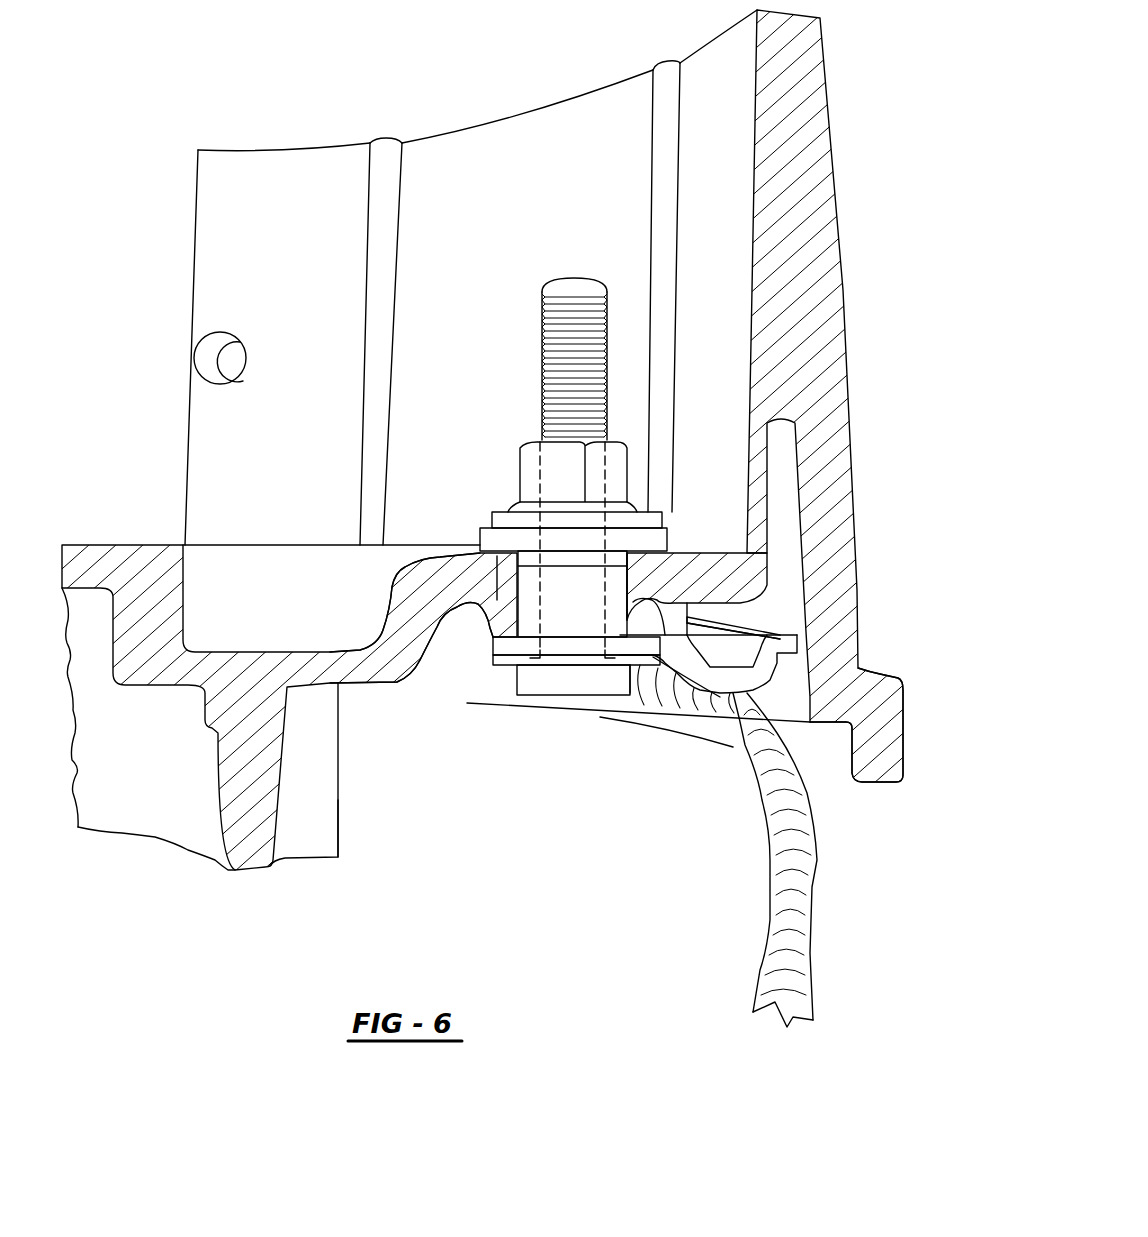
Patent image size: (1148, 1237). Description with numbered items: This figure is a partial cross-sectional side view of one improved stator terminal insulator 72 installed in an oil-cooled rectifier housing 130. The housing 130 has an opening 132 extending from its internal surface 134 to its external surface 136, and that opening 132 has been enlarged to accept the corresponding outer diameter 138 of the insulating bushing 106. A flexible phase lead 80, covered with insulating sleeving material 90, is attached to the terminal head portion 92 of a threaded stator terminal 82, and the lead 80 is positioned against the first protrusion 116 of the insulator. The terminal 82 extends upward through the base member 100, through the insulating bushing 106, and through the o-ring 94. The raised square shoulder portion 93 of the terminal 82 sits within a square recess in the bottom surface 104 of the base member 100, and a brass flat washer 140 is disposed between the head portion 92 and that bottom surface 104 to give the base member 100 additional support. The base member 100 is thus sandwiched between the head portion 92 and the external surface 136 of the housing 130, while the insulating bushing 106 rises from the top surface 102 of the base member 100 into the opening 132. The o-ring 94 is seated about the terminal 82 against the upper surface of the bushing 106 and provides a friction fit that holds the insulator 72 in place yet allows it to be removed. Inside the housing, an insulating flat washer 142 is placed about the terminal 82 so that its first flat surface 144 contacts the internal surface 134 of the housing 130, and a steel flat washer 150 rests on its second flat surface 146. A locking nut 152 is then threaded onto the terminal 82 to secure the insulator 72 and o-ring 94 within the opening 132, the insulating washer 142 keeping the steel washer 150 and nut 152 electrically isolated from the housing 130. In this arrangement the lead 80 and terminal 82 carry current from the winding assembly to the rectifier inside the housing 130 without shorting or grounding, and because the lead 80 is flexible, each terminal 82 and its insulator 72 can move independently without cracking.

The stator terminal insulator 72 is at (793, 625).
The phase lead 80 is at (780, 860).
The stator terminal 82 is at (558, 282).
The insulating sleeving material 90 is at (780, 897).
The terminal head portion 92 is at (582, 678).
The raised square shoulder portion 93 is at (530, 650).
The o-ring 94 is at (637, 600).
The base member 100 is at (800, 662).
The top surface 102 is at (773, 620).
The bottom surface 104 is at (790, 670).
The insulating bushing 106 is at (567, 617).
The first protrusion 116 is at (740, 695).
The rectifier housing 130 is at (845, 422).
The opening 132 is at (485, 615).
The internal surface 134 is at (270, 647).
The external surface 136 is at (513, 617).
The outer diameter 138 is at (670, 670).
The brass flat washer 140 is at (608, 660).
The insulating flat washer 142 is at (662, 540).
The first flat surface 144 is at (507, 553).
The second flat surface 146 is at (483, 520).
The steel flat washer 150 is at (640, 520).
The locking nut 152 is at (620, 447).